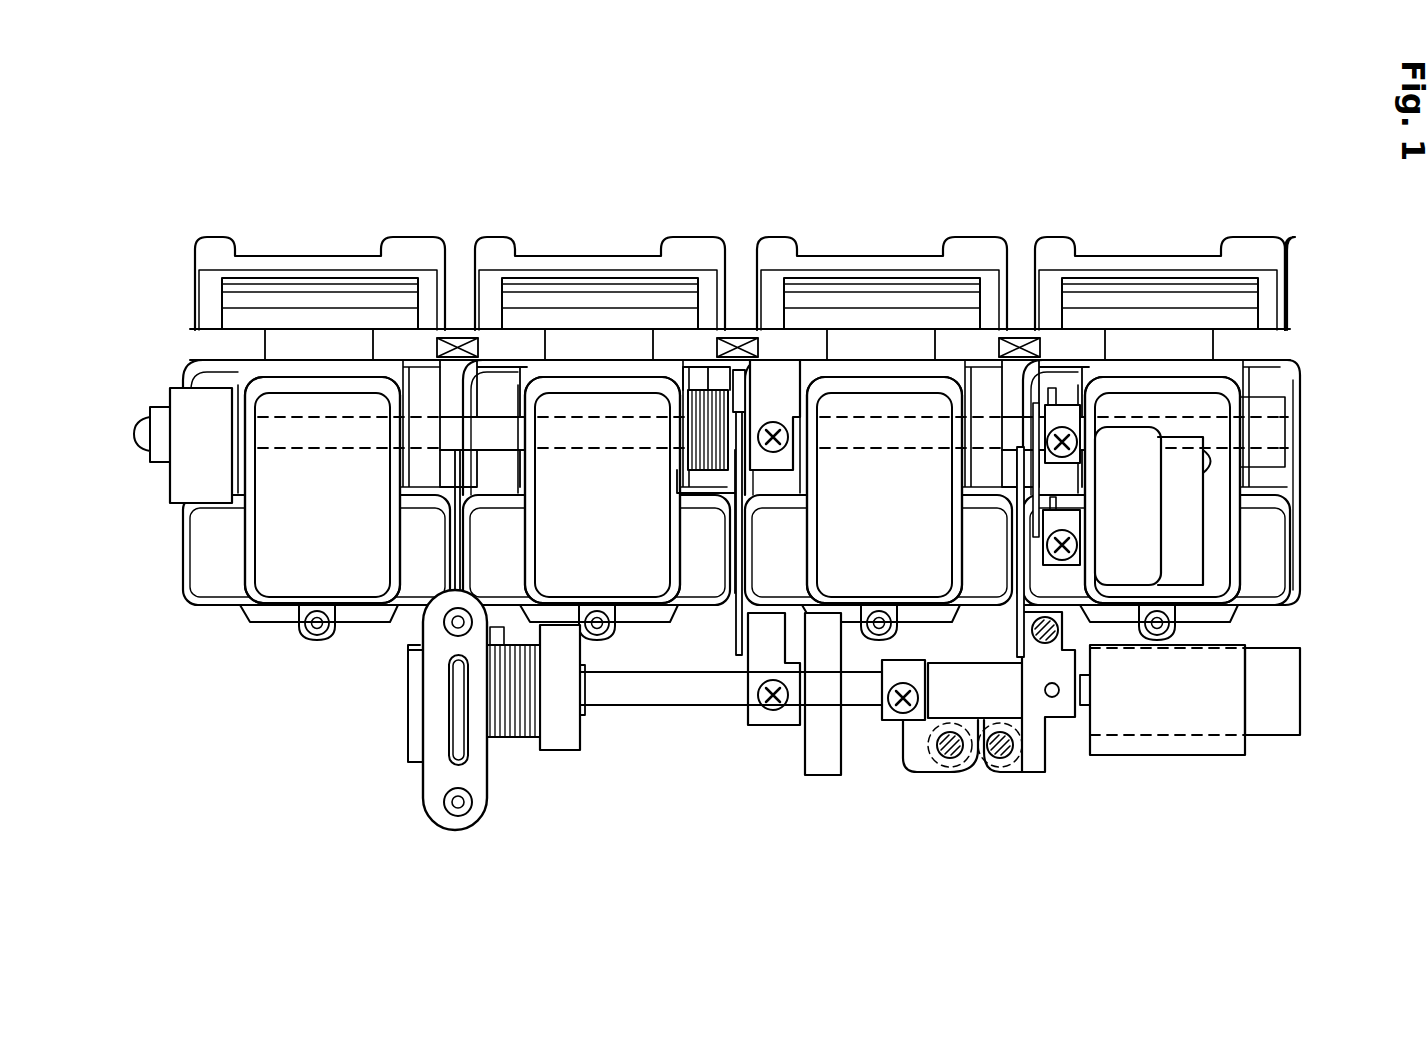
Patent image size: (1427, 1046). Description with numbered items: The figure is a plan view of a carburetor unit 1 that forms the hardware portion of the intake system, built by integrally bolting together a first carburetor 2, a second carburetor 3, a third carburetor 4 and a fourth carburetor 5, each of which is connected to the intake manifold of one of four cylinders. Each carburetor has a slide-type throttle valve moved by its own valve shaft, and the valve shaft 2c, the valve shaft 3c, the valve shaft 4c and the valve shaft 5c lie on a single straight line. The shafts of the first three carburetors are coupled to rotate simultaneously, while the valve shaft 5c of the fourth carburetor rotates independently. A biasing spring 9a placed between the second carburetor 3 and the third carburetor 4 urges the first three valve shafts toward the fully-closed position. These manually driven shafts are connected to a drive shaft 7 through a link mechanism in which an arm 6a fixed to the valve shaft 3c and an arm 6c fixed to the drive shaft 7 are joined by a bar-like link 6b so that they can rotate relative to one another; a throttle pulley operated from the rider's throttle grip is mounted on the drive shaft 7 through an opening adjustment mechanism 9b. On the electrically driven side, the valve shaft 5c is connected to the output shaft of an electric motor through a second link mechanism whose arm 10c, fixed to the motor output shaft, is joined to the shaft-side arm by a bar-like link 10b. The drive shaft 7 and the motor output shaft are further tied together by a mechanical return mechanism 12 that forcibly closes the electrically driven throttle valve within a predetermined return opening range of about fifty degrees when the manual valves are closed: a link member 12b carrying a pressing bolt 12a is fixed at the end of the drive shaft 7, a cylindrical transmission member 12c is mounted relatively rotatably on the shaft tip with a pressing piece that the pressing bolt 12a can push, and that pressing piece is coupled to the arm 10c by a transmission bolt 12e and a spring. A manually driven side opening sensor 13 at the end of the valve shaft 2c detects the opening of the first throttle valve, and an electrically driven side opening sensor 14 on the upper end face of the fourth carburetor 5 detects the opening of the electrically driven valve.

The carburetor unit 1 is at (722, 150).
The first carburetor 2 is at (355, 404).
The valve shaft 2c is at (296, 412).
The second carburetor 3 is at (610, 404).
The valve shaft 3c is at (602, 396).
The third carburetor 4 is at (917, 404).
The valve shaft 4c is at (884, 396).
The fourth carburetor 5 is at (1161, 404).
The valve shaft 5c is at (1162, 389).
The arm 6a is at (778, 378).
The bar-like link 6b is at (738, 614).
The arm 6c is at (748, 725).
The drive shaft 7 is at (664, 707).
The biasing spring 9a is at (729, 385).
The opening adjustment mechanism 9b is at (524, 742).
The bar-like link 10b is at (1012, 640).
The arm 10c is at (1060, 766).
The mechanical return mechanism 12 is at (975, 782).
The pressing bolt 12a is at (952, 762).
The link member 12b is at (905, 748).
The transmission member 12c is at (940, 667).
The transmission bolt 12e is at (1008, 763).
The manually driven side opening sensor 13 is at (185, 410).
The electrically driven side opening sensor 14 is at (1210, 556).